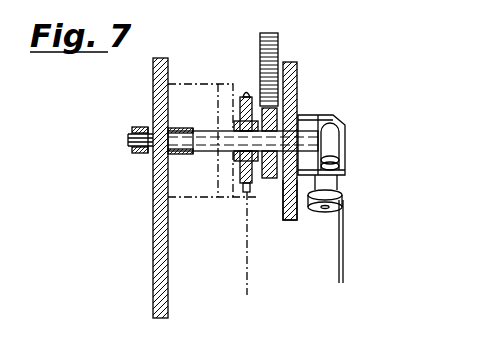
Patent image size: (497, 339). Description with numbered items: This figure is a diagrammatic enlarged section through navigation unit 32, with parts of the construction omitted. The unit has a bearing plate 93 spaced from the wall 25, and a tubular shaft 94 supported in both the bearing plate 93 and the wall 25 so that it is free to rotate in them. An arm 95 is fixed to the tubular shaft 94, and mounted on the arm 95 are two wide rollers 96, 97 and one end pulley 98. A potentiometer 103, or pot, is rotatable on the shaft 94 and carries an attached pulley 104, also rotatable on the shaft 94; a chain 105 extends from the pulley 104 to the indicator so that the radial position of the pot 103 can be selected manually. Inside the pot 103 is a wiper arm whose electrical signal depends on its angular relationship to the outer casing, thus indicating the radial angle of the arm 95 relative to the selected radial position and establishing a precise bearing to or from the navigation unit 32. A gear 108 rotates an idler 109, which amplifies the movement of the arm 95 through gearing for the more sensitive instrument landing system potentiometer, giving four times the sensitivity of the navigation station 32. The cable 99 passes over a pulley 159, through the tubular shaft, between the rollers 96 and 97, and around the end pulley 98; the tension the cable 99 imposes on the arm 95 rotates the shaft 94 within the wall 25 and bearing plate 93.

The wall 25 is at (153, 278).
The navigation unit 32 is at (305, 68).
The bearing plate 93 is at (290, 222).
The tubular shaft 94 is at (189, 132).
The arm 95 is at (311, 114).
The wide roller 96 is at (336, 128).
The wide roller 97 is at (340, 165).
The end pulley 98 is at (320, 212).
The cable 99 is at (343, 270).
The potentiometer 103 is at (187, 83).
The pulley 104 is at (241, 187).
The chain 105 is at (244, 250).
The gear 108 is at (273, 181).
The idler 109 is at (270, 36).
The pulley 159 is at (132, 139).